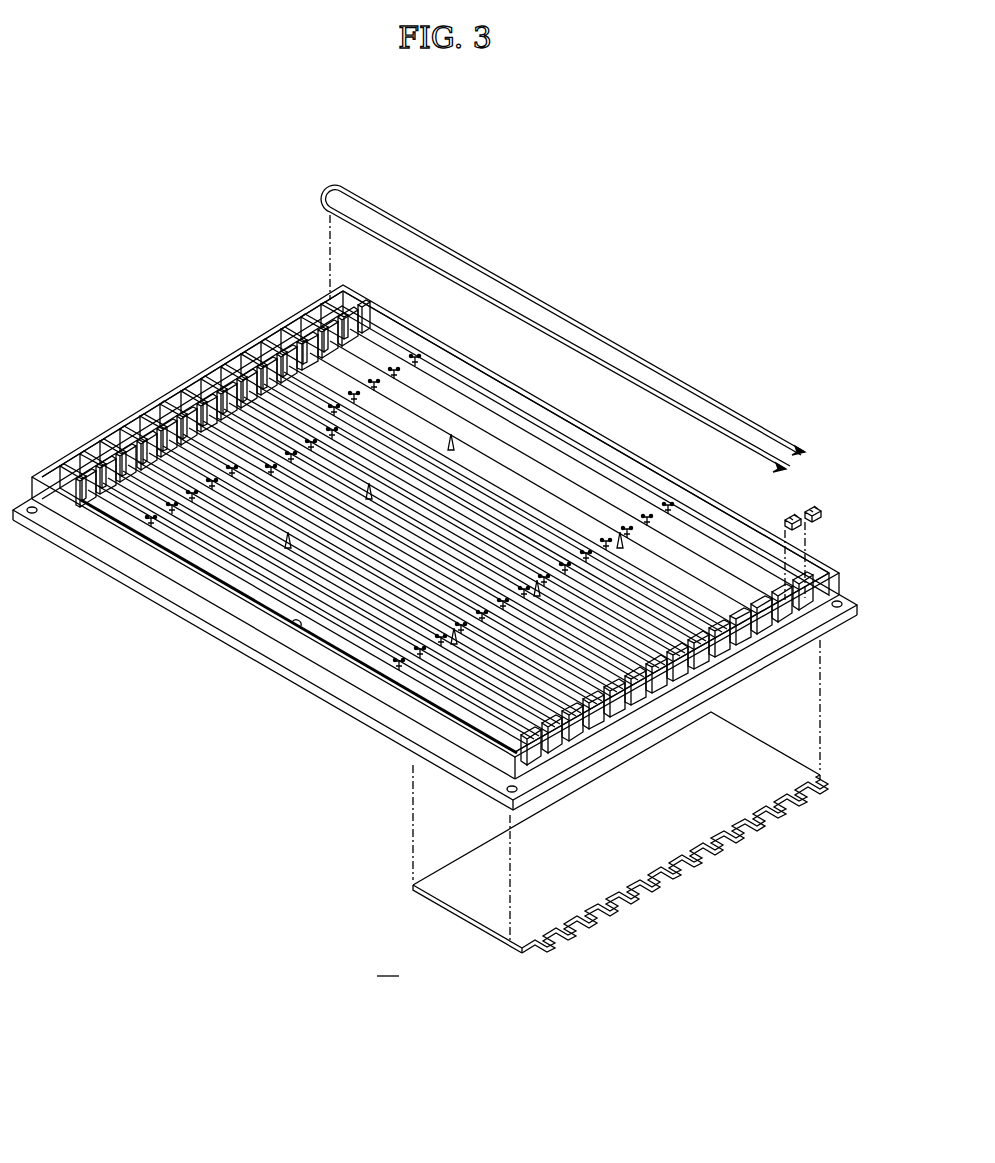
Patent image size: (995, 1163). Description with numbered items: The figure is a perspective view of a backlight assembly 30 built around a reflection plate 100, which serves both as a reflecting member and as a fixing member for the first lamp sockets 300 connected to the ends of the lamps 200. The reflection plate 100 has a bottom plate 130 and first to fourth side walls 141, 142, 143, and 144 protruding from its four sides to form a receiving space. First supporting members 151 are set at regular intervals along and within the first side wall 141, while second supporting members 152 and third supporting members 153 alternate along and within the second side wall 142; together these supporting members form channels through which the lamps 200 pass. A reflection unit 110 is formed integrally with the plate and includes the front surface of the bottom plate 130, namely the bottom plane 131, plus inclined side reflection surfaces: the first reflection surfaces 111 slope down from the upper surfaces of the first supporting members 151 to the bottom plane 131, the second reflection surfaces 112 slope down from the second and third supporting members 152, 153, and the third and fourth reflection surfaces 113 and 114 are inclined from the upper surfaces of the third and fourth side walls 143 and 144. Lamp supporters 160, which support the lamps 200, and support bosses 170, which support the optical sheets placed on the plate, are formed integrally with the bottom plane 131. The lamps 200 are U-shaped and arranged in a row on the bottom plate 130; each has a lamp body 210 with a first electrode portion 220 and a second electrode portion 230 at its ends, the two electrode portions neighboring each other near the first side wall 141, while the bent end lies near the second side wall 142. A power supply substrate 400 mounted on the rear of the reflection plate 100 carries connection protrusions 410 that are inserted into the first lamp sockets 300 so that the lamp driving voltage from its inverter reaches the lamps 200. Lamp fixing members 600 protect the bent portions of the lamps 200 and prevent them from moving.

The backlight assembly 30 is at (454, 557).
The reflection plate 100 is at (454, 557).
The reflection unit 110 is at (433, 543).
The first reflection surfaces 111 is at (545, 690).
The second reflection surfaces 112 is at (370, 355).
The third reflection surface 113 is at (462, 402).
The fourth reflection surface 114 is at (290, 628).
The bottom plate 130 is at (848, 612).
The bottom plane 131 is at (526, 470).
The first side wall 141 is at (742, 660).
The second side wall 142 is at (165, 423).
The third side wall 143 is at (626, 456).
The fourth side wall 144 is at (333, 688).
The first supporting members 151 is at (742, 612).
The second supporting members 152 is at (312, 345).
The third supporting members 153 is at (238, 380).
The lamp supporters 160 is at (615, 532).
The support bosses 170 is at (633, 553).
The lamps 200 is at (588, 318).
The lamp body 210 is at (643, 360).
The first electrode portion 220 is at (812, 458).
The second electrode portion 230 is at (790, 470).
The first lamp sockets 300 is at (810, 520).
The power supply substrate 400 is at (758, 762).
The connection protrusions 410 is at (800, 810).
The lamp fixing members 600 is at (330, 192).